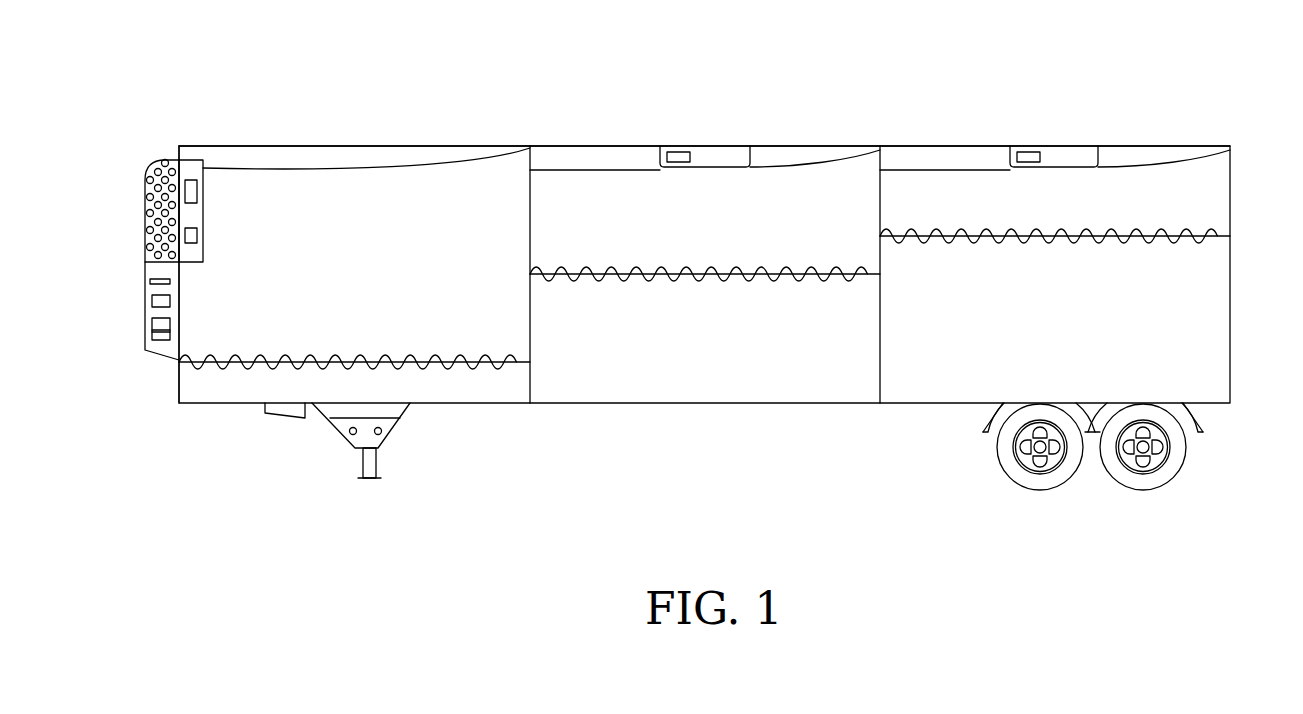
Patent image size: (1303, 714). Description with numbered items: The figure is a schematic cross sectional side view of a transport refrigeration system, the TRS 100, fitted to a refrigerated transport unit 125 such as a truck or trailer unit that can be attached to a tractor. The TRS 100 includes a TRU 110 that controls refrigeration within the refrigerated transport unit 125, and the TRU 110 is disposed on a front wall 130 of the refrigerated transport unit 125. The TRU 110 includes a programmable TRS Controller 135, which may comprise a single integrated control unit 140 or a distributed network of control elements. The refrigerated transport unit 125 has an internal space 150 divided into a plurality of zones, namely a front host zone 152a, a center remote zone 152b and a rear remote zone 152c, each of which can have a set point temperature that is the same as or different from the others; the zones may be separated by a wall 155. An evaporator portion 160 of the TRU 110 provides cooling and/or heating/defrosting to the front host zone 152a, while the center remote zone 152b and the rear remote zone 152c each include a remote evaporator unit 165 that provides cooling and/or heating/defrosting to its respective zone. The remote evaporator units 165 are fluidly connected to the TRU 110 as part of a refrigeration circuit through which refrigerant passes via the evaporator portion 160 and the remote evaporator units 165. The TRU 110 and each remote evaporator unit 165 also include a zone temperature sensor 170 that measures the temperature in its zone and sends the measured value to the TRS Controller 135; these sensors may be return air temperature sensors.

The TRS 100 is at (1222, 66).
The TRU 110 is at (156, 164).
The refrigerated transport unit 125 is at (470, 145).
The front wall 130 is at (179, 393).
The TRS Controller 135 is at (135, 278).
The single integrated control unit 140 is at (152, 300).
The internal space 150 is at (663, 385).
The front host zone 152a is at (230, 395).
The center remote zone 152b is at (802, 385).
The rear remote zone 152c is at (940, 395).
The wall 155 is at (532, 160).
The evaporator portion 160 is at (190, 180).
The remote evaporator unit 165 is at (704, 146).
The zone temperature sensor 170 is at (198, 235).